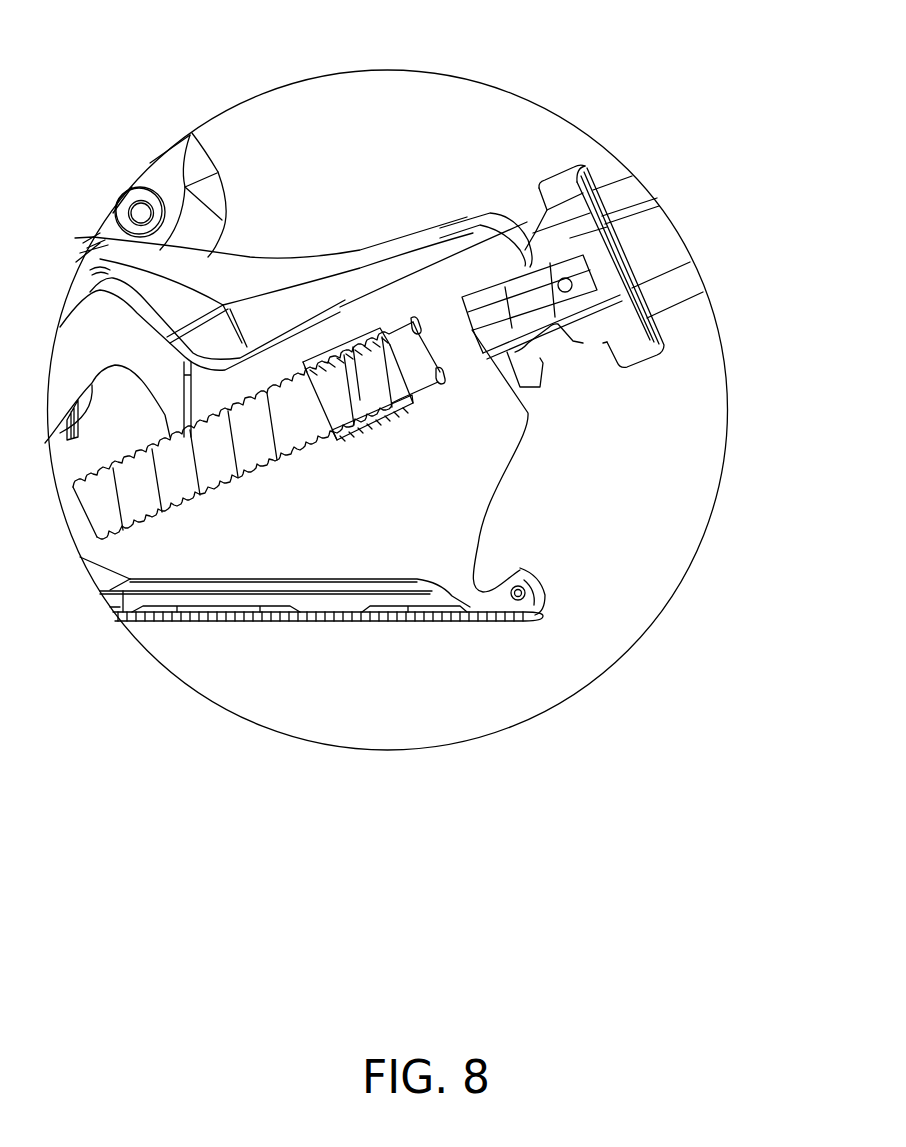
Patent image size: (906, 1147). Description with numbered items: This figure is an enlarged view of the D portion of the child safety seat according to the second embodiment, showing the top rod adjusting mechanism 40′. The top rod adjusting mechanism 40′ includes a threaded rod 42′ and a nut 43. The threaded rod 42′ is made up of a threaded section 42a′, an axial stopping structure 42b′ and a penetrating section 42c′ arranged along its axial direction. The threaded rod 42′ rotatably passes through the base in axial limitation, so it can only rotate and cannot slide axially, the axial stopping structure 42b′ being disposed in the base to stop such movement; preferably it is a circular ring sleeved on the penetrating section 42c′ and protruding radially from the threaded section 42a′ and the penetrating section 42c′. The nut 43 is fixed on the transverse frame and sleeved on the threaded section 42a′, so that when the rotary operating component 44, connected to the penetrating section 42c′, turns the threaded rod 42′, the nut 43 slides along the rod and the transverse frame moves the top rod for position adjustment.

The top rod adjusting mechanism 40′ is at (770, 853).
The threaded rod 42′ is at (672, 806).
The threaded section 42a′ is at (301, 430).
The axial stopping structure 42b′ is at (415, 320).
The penetrating section 42c′ is at (455, 345).
The nut 43 is at (347, 348).
The rotary operating component 44 is at (588, 352).
The D portion D is at (540, 104).